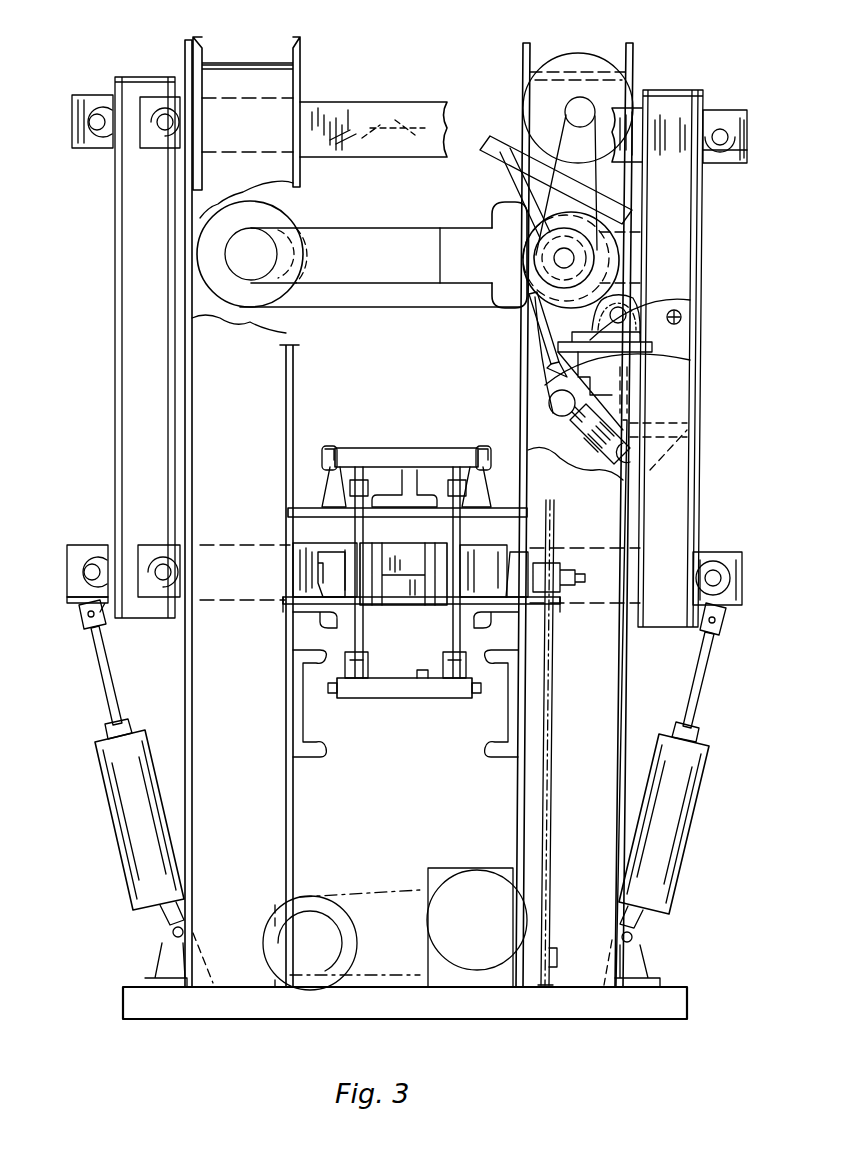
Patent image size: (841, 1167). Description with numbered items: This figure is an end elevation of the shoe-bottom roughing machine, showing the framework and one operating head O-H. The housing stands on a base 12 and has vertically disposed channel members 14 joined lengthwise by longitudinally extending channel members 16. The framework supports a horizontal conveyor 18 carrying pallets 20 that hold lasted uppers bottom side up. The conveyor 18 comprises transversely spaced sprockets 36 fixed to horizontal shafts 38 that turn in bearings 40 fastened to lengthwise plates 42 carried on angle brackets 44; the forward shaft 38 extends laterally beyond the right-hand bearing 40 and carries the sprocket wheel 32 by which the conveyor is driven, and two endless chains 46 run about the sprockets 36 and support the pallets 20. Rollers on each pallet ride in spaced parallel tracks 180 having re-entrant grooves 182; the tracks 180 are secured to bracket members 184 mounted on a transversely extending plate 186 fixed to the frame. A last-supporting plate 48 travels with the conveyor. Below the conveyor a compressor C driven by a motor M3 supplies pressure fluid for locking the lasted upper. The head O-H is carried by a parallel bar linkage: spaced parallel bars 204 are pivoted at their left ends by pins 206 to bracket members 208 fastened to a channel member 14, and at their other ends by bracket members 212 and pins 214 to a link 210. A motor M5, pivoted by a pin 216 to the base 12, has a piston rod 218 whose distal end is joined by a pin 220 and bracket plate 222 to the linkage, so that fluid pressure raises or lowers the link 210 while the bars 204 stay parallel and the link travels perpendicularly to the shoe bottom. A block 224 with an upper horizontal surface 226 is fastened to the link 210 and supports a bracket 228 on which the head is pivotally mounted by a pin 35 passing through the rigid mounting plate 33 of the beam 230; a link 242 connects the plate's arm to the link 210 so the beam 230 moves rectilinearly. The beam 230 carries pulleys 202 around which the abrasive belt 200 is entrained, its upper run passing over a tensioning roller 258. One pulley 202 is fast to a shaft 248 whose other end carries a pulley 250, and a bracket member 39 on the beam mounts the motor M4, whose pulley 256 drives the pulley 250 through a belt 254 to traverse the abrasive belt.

The base 12 is at (333, 1021).
The channel members 14 is at (185, 668).
The channel members 16 is at (284, 718).
The conveyor 18 is at (417, 580).
The pallets 20 is at (410, 692).
The sprocket wheel 32 is at (560, 535).
The mounting plate 33 is at (548, 360).
The pin 35 is at (630, 322).
The sprockets 36 is at (366, 645).
The shafts 38 is at (405, 580).
The bracket member 39 is at (505, 180).
The bearings 40 is at (497, 560).
The plates 42 is at (288, 604).
The angle brackets 44 is at (300, 655).
The endless chains 46 is at (372, 682).
The last-supporting plate 48 is at (388, 450).
The tracks 180 is at (349, 431).
The re-entrant grooves 182 is at (322, 458).
The bracket members 184 is at (330, 505).
The transversely extending plate 186 is at (399, 557).
The endless abrasive belt 200 is at (435, 312).
The pulleys 202 is at (705, 262).
The parallel bars 204 is at (372, 93).
The pins 206 is at (140, 160).
The bracket members 208 is at (112, 150).
The link 210 is at (683, 491).
The bracket members 212 is at (722, 128).
The pins 214 is at (718, 160).
The pin 216 is at (172, 934).
The piston rod 218 is at (108, 705).
The pin 220 is at (85, 630).
The bracket plate 222 is at (78, 612).
The block 224 is at (648, 386).
The upper horizontal surface 226 is at (654, 352).
The bracket 228 is at (692, 300).
The beam 230 is at (445, 226).
The link 242 is at (655, 432).
The shaft 248 is at (556, 257).
The pulley 250 is at (545, 268).
The belt 254 is at (562, 101).
The pulley 256 is at (600, 108).
The tensioning roller 258 is at (365, 160).
The motor M3 is at (318, 915).
The motor M4 is at (588, 55).
The motor M5 is at (140, 832).
The compressor C is at (470, 875).
The operating head O-H is at (497, 100).